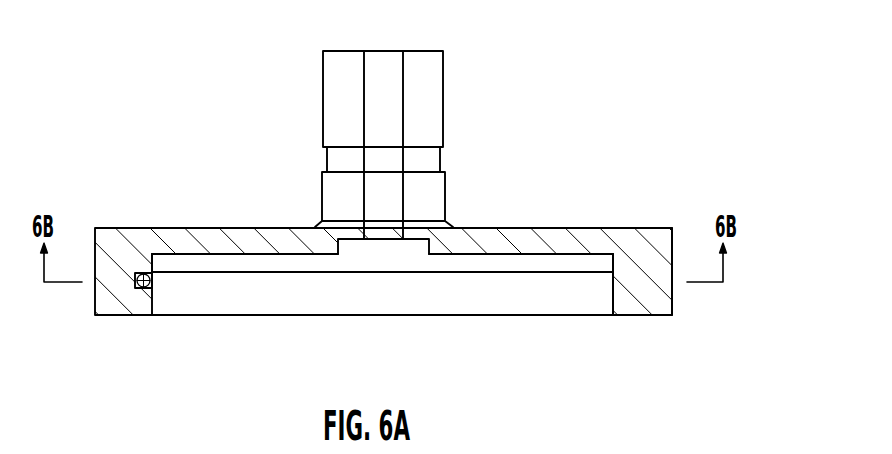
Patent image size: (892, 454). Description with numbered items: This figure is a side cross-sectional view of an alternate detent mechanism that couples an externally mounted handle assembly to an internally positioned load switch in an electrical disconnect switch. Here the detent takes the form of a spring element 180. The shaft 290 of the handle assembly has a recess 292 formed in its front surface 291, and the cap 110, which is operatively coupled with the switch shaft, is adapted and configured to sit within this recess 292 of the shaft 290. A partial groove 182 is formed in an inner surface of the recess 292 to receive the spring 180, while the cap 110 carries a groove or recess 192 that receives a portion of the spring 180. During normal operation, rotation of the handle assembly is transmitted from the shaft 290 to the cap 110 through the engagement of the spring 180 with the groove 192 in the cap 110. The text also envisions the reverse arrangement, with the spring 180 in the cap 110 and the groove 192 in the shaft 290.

The cap 110 is at (297, 315).
The spring element 180 is at (130, 293).
The partial groove 182 is at (137, 273).
The groove 192 is at (154, 272).
The shaft 290 is at (518, 108).
The front surface 291 is at (647, 315).
The recess 292 is at (448, 295).